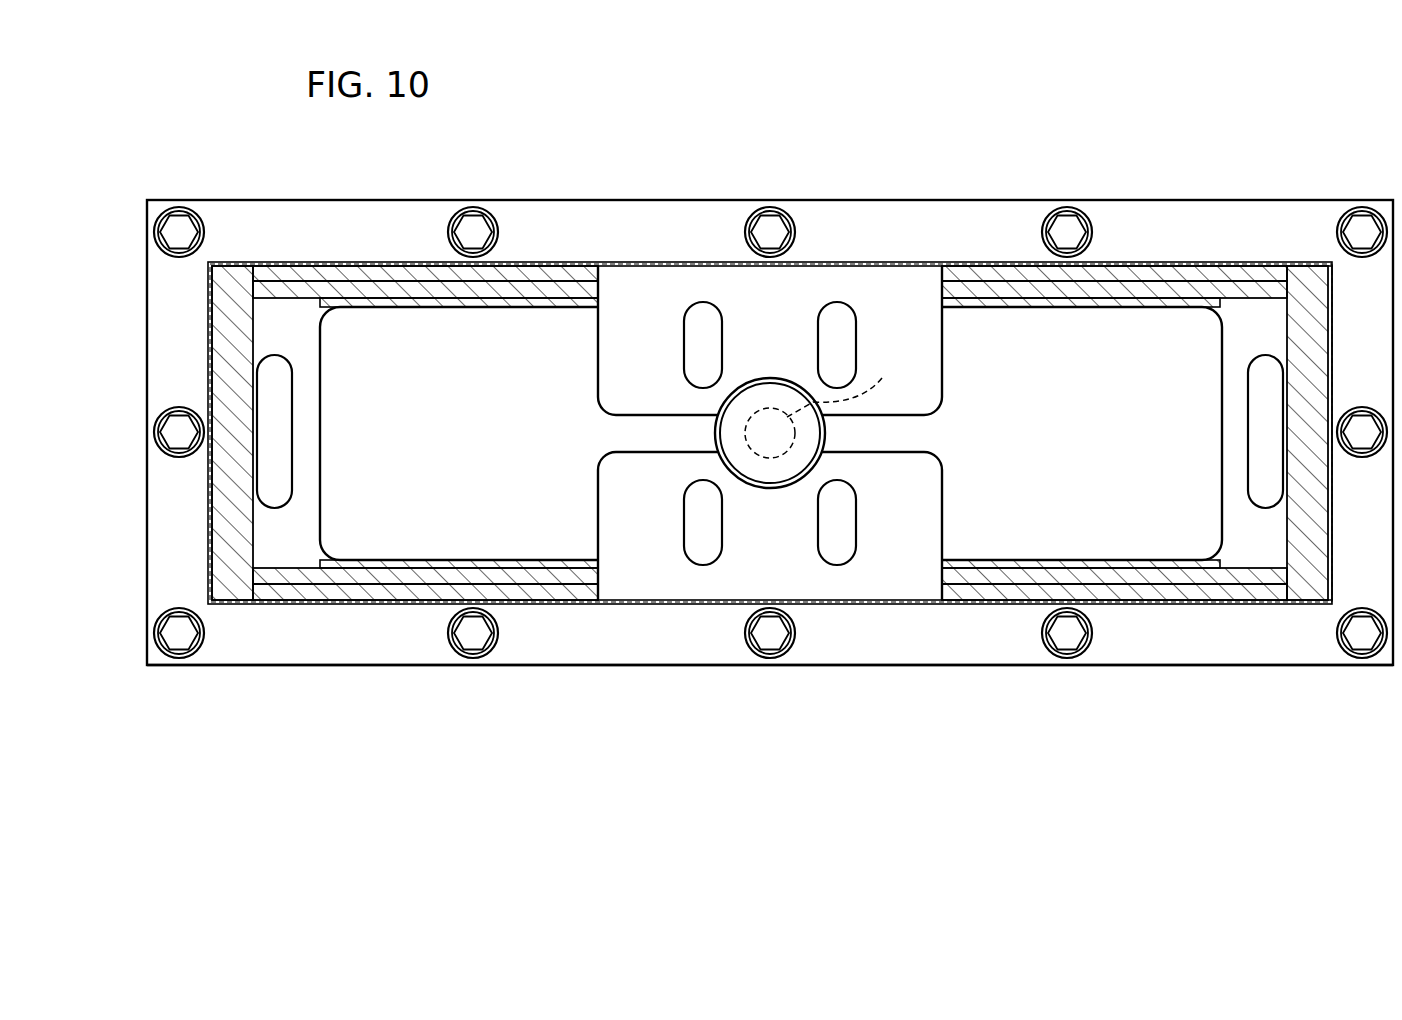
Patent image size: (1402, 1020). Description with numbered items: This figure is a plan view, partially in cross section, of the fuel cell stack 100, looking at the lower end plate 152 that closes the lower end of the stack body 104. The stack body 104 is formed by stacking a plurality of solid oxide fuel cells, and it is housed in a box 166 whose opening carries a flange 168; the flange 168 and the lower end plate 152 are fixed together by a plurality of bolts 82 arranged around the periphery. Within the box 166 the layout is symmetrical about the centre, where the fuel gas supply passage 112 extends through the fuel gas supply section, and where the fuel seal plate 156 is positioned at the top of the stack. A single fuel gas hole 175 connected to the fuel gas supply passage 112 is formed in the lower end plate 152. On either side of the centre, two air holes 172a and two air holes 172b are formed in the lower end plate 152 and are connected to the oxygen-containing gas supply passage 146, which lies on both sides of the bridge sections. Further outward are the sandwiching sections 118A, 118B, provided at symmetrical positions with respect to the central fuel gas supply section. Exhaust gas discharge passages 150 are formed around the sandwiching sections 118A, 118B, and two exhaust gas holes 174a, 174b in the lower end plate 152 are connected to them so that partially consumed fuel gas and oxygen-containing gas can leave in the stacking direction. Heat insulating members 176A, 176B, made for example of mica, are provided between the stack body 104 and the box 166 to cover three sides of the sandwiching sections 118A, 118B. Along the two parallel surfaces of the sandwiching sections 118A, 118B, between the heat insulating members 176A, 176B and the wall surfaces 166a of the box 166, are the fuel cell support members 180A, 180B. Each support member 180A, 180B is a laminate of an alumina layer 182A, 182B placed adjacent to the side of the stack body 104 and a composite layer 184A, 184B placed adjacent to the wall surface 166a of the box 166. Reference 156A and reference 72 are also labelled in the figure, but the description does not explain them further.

The fuel cell stack 100 is at (379, 166).
The stack body 104 is at (507, 305).
The fuel gas supply passage 112 is at (762, 433).
The sandwiching section 118A is at (982, 340).
The sandwiching section 118B is at (415, 338).
The oxygen-containing gas supply passage 146 is at (665, 288).
The exhaust gas discharge passage 150 is at (310, 408).
The lower end plate 152 is at (830, 668).
The fuel seal plate 156 is at (800, 453).
The end surface of cylindrical portion 156A is at (1213, 280).
The box 166 is at (855, 240).
The wall surface 166a is at (1118, 262).
The flange 168 is at (1167, 215).
The air hole 172a is at (828, 548).
The air hole 172b is at (828, 318).
The exhaust gas hole 174a is at (1262, 458).
The exhaust gas hole 174b is at (275, 445).
The fuel gas hole 175 is at (846, 383).
The heat insulating member 176A is at (1063, 308).
The heat insulating member 176B is at (228, 400).
The fuel cell support member 180A is at (1095, 752).
The fuel cell support member 180B is at (492, 752).
The alumina layer 182A is at (1173, 580).
The alumina layer 182B is at (570, 578).
The composite layer 184A is at (1135, 595).
The composite layer 184B is at (531, 595).
The bolt 72 is at (1064, 645).
The bolt 82 is at (476, 645).